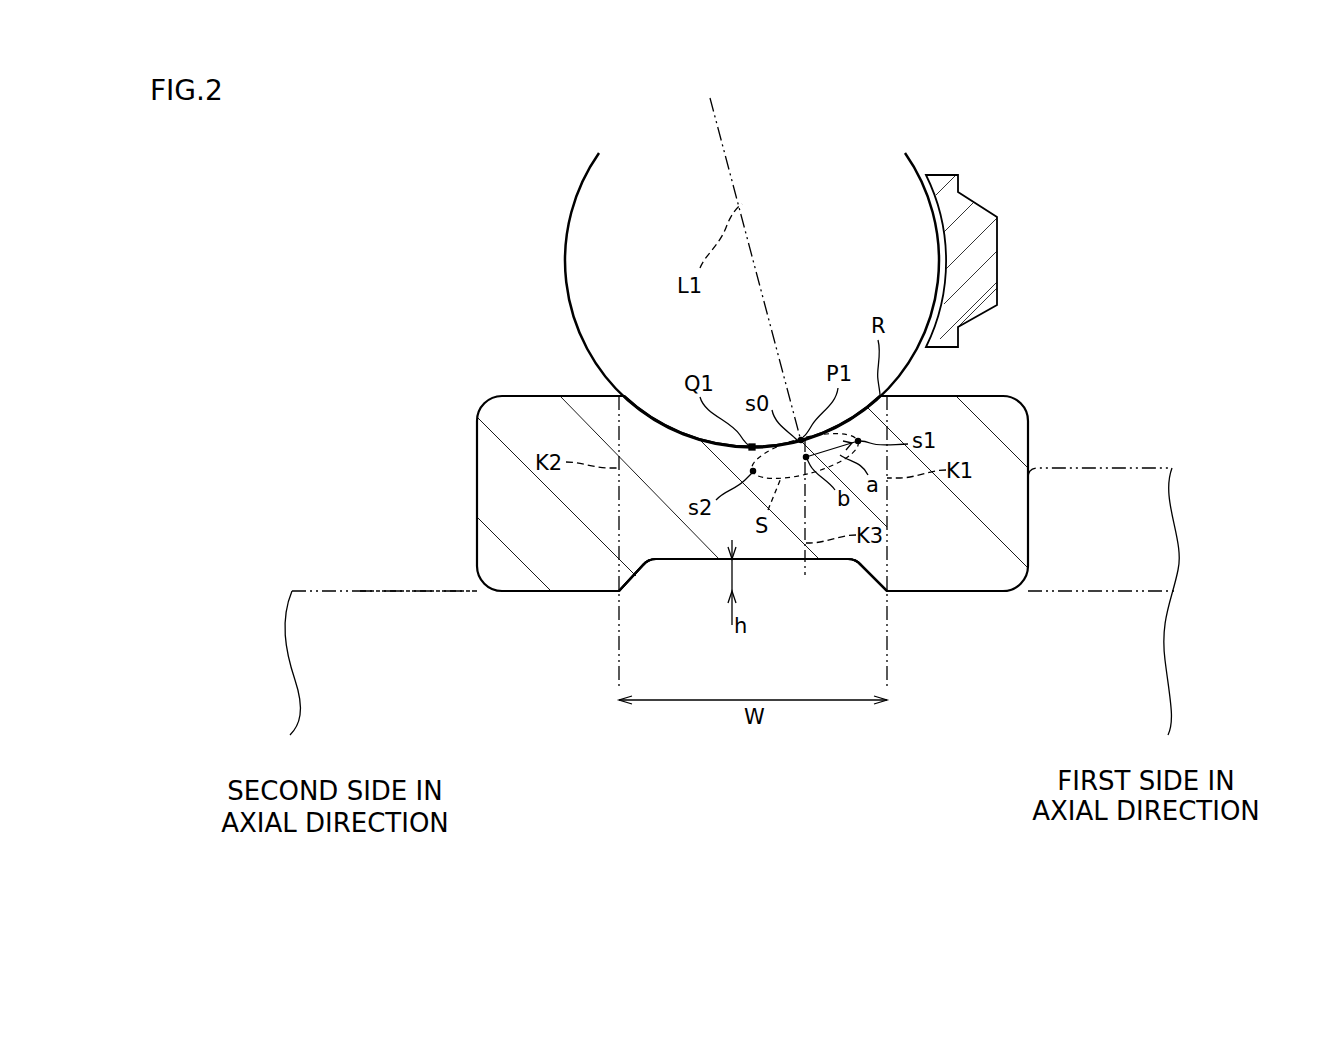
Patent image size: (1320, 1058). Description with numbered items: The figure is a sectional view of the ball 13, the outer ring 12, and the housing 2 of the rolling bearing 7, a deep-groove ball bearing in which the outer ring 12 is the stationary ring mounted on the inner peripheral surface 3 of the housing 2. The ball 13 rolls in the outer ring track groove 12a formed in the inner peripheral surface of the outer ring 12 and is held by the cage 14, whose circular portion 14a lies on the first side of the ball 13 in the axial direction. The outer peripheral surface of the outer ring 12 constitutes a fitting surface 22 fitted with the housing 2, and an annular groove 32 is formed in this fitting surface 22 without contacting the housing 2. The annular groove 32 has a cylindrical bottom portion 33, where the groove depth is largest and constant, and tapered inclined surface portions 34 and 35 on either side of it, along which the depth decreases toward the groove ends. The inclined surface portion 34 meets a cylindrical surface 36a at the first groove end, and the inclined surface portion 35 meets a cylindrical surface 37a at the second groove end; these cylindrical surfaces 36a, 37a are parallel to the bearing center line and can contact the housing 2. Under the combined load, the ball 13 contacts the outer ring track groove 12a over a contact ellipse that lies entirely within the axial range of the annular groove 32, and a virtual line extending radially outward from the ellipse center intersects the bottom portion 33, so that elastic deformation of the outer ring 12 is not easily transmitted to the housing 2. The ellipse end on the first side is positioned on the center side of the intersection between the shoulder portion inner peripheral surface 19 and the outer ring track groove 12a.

The housing 2 is at (332, 590).
The inner peripheral surface 3 is at (408, 590).
The rolling bearing 7 is at (1020, 210).
The outer ring 12 is at (804, 507).
The outer ring track groove 12a is at (668, 418).
The ball 13 is at (566, 265).
The cage 14 is at (1020, 260).
The circular portion 14a is at (980, 265).
The shoulder portion inner peripheral surface 19 is at (1000, 397).
The fitting surface 22 is at (918, 595).
The annular groove 32 is at (753, 613).
The bottom portion 33 is at (706, 562).
The inclined surface portion 34 is at (860, 604).
The inclined surface portion 35 is at (641, 568).
The cylindrical surface 36a is at (945, 594).
The cylindrical surface 37a is at (557, 594).